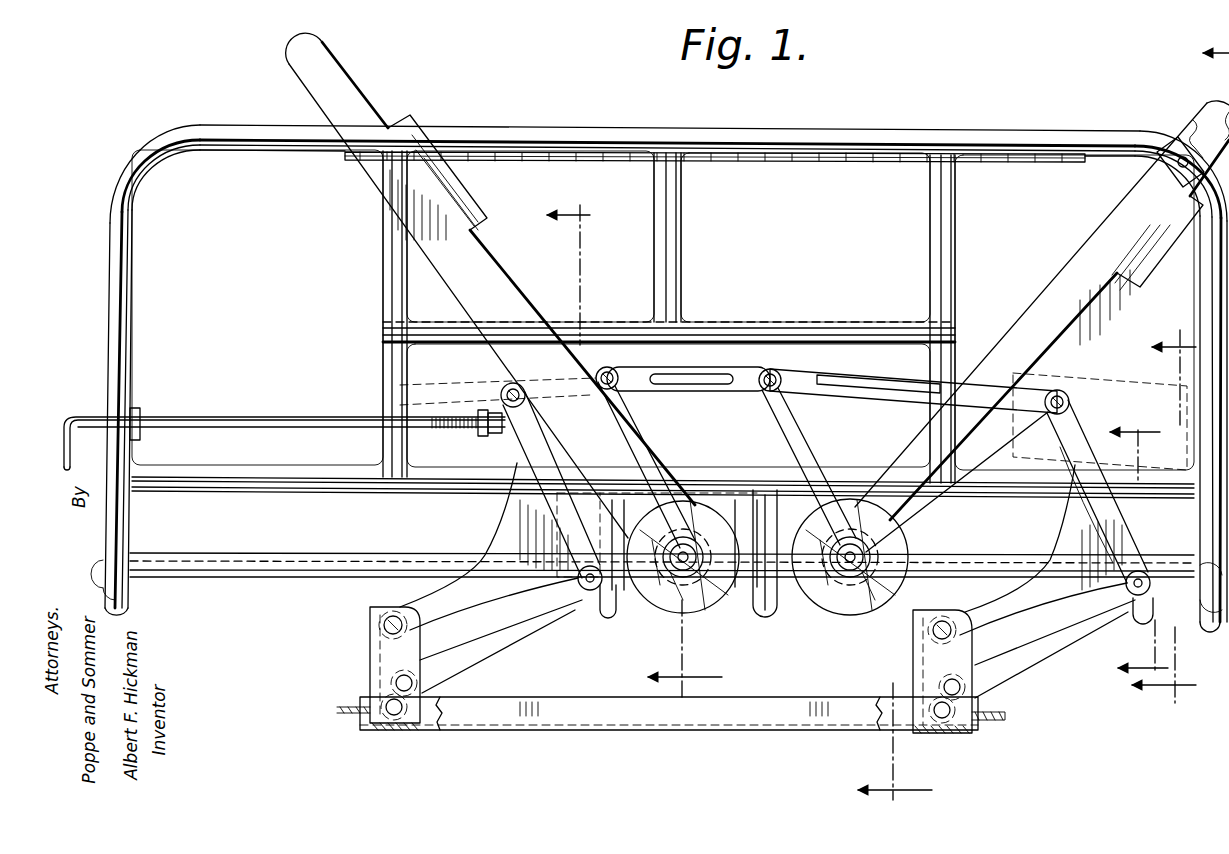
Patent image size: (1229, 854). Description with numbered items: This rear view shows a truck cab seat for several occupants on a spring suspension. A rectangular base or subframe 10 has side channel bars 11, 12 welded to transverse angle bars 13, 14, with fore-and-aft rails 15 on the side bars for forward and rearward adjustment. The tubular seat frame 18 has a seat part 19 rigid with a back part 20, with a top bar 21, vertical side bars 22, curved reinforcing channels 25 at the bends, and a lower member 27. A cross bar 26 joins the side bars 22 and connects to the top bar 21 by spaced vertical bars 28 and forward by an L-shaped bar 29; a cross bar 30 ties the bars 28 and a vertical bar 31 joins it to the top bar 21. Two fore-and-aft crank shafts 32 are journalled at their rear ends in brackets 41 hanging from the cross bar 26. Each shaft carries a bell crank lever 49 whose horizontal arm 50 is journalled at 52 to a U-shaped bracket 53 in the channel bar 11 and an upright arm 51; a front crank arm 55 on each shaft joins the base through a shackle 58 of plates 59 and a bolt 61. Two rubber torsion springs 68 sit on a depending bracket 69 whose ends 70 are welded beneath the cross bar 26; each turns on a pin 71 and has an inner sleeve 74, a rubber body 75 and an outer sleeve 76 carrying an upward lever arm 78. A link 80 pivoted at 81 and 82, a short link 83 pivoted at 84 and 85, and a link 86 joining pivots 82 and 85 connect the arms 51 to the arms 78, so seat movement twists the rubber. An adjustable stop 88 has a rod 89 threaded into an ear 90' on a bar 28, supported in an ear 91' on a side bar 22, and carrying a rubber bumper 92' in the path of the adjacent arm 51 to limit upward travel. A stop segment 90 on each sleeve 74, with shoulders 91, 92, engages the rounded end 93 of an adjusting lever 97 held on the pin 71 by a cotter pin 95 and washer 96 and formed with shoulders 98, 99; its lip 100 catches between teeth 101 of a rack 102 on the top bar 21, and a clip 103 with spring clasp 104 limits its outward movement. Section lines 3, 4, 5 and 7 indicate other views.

The section line 3- 3 is at (1164, 518).
The section line 4- 4 is at (1043, 416).
The section line 5- 5 is at (1139, 539).
The section line 7- 7 is at (634, 445).
The base or subframe 10 is at (640, 734).
The side channel bar 11 is at (368, 700).
The side channel bar 12 is at (978, 704).
The transverse angle bar 13 is at (884, 705).
The transverse angle bar 14 is at (698, 732).
The angle bars (fore-and-aft rails) 15 is at (338, 710).
The seat frame 18 is at (196, 126).
The seat part 19 is at (290, 583).
The back part 20 is at (868, 130).
The top bar 21 is at (783, 130).
The side bars 22 is at (132, 337).
The curved channel 25 is at (132, 527).
The cross bar 26 is at (278, 490).
The bottom cross rail 27 is at (282, 556).
The vertical bars 28 is at (383, 357).
The L-shaped bar 29 is at (770, 622).
The horizontal cross bar 30 is at (890, 314).
The vertical bar 31 is at (681, 235).
The crank shafts 32 is at (604, 616).
The bracket 41 is at (1168, 523).
The bell crank lever 49 is at (520, 456).
The horizontal crank arm 50 is at (763, 549).
The upright crank arm 51 is at (806, 445).
The pivot mounting 52 is at (393, 618).
The bracket 53 is at (376, 619).
The crank arm 55 is at (514, 638).
The shackle 58 is at (390, 683).
The plates 59 is at (408, 696).
The bolt 61 is at (392, 732).
The rubber torsion springs 68 is at (692, 498).
The depending bracket or plate 69 is at (776, 606).
The ends 70 is at (615, 520).
The pin 71 is at (672, 550).
The sleeve 74 is at (700, 575).
The body of rubber 75 is at (683, 572).
The outer sleeve 76 is at (700, 540).
The lever arm 78 is at (650, 427).
The link 80 is at (925, 384).
The pivot 81 is at (1062, 391).
The pivot 82 is at (773, 370).
The short link 83 is at (506, 385).
The pivot 84 is at (501, 393).
The pivot 85 is at (616, 372).
The link 86 is at (712, 390).
The adjustable stop 88 is at (240, 420).
The horizontal rod 89 is at (282, 428).
The axially projecting segment 90 is at (737, 614).
The threaded ear 90' is at (445, 405).
The stop shoulder 91 is at (723, 575).
The ear 91' is at (153, 417).
The stop shoulder 92 is at (766, 625).
The rubber bumper 92' is at (477, 415).
The rounding end 93 is at (70, 457).
The cotter pin 95 is at (880, 505).
The washer 96 is at (712, 535).
The handle arm 97 is at (1068, 277).
The stop shoulder 98 is at (668, 578).
The stop shoulder 99 is at (690, 556).
The lip or flange 100 is at (484, 226).
The teeth 101 is at (700, 161).
The rack 102 is at (830, 163).
The clip 103 is at (1165, 142).
The spring clasp 104 is at (1180, 168).